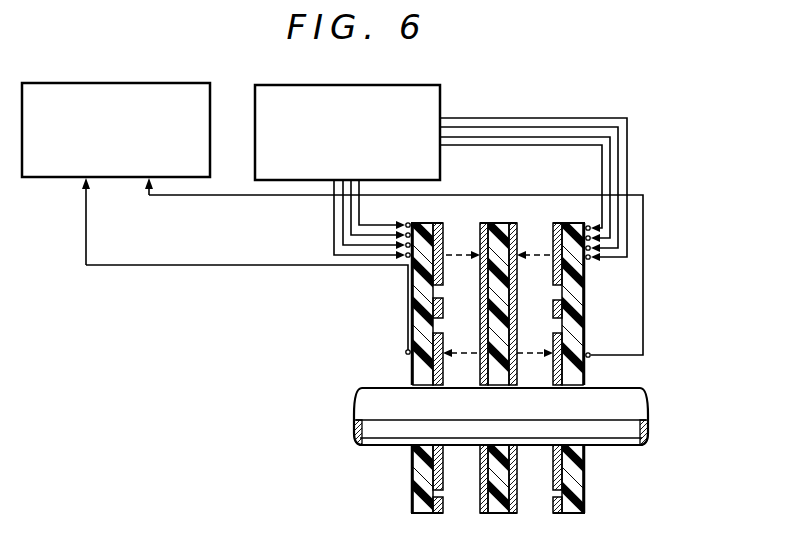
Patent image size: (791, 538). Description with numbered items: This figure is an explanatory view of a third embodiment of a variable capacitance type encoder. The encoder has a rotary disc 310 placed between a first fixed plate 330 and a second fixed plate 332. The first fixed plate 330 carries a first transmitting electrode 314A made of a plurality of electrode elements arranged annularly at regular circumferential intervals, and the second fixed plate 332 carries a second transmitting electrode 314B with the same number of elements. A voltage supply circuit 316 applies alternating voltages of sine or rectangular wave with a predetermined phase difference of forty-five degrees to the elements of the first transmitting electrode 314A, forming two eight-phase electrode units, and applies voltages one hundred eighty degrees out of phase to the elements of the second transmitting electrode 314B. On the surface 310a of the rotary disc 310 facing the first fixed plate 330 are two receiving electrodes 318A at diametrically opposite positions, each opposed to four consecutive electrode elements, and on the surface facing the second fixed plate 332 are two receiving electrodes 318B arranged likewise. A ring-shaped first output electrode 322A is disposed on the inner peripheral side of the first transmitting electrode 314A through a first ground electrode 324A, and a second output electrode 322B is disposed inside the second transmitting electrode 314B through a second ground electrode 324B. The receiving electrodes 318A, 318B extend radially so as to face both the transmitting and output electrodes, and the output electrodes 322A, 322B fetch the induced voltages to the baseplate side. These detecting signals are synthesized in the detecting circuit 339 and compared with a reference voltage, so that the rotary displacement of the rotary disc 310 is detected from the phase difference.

The detecting circuit 339 is at (108, 83).
The voltage supply circuit 316 is at (266, 85).
The first transmitting electrode 314A is at (440, 223).
The second transmitting electrode 314B is at (556, 238).
The first receiving electrode 318A is at (479, 224).
The second receiving electrode 318B is at (513, 224).
The first ground electrode 324A is at (436, 312).
The second ground electrode 324B is at (574, 303).
The first output electrode 322A is at (436, 348).
The second output electrode 322B is at (575, 346).
The rotary disc 310 is at (497, 512).
The shaft surface 310a is at (375, 430).
The first fixed plate 330 is at (415, 500).
The second fixed plate 332 is at (583, 477).